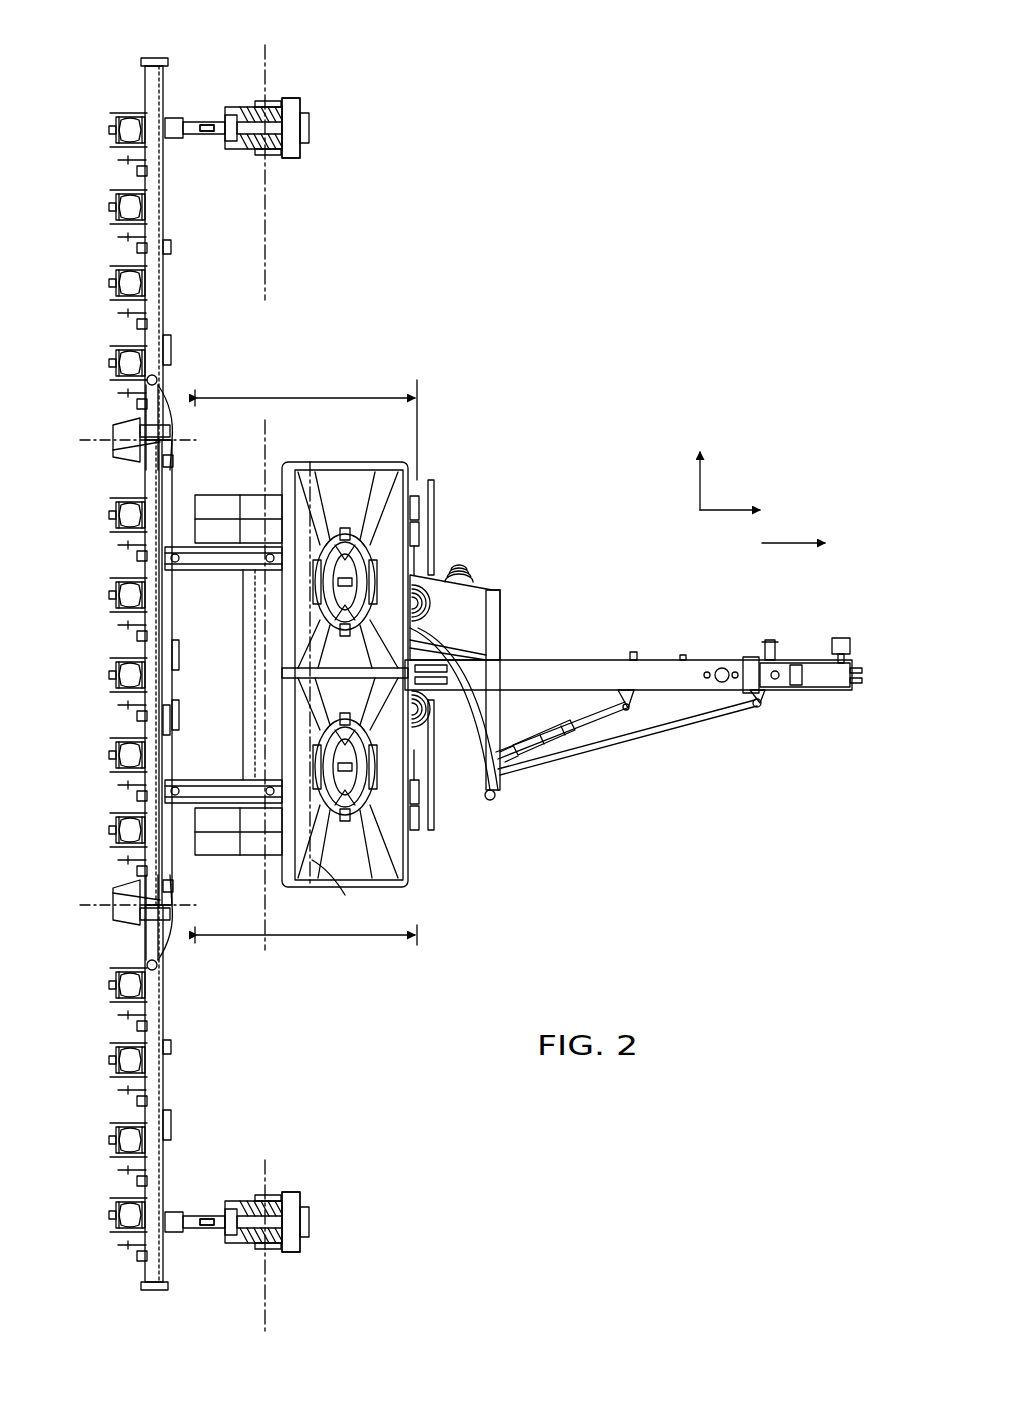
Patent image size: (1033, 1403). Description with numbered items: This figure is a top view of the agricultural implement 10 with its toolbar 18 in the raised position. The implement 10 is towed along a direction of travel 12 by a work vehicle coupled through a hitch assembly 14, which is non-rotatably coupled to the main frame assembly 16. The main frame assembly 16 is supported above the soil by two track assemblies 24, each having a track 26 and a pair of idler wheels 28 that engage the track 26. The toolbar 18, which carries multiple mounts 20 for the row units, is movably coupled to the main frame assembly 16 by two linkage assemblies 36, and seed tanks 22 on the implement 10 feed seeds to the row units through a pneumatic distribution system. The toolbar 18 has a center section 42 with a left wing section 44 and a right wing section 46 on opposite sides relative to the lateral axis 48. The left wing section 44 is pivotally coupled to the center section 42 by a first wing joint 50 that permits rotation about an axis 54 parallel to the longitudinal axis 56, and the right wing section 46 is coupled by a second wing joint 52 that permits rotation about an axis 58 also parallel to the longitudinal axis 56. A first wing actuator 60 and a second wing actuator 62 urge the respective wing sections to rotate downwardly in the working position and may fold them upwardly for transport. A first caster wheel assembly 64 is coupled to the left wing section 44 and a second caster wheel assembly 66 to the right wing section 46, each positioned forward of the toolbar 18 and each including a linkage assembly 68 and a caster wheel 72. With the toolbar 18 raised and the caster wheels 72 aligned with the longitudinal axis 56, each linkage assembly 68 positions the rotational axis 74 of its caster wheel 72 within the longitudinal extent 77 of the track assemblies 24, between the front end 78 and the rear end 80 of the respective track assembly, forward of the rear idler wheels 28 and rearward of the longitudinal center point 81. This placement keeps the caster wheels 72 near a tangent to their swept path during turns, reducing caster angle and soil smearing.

The agricultural implement 10 is at (580, 495).
The direction of travel 12 is at (785, 545).
The hitch assembly 14 is at (815, 660).
The main frame assembly 16 is at (495, 590).
The toolbar 18 is at (150, 640).
The mounts 20 is at (106, 283).
The seed tanks 22 is at (360, 465).
The track assemblies 24 is at (435, 485).
The track 26 is at (265, 505).
The idler wheels 28 is at (240, 495).
The linkage assemblies 36 is at (228, 595).
The center section 42 is at (160, 727).
The left wing section 44 is at (158, 100).
The right wing section 46 is at (158, 1170).
The lateral axis 48 is at (703, 480).
The first wing joint 50 is at (120, 405).
The second wing joint 52 is at (120, 880).
The axis 54 is at (100, 440).
The longitudinal axis 56 is at (725, 508).
The axis 58 is at (100, 905).
The first wing actuator 60 is at (140, 458).
The second wing actuator 62 is at (140, 898).
The first caster wheel assembly 64 is at (200, 100).
The second caster wheel assembly 66 is at (222, 1250).
The linkage assembly 68 is at (200, 135).
The caster wheel 72 is at (302, 135).
The rotational axis 74 is at (265, 75).
The longitudinal extent 77 is at (325, 398).
The front end 78 is at (422, 532).
The rear end 80 is at (195, 512).
The longitudinal center point 81 is at (322, 872).